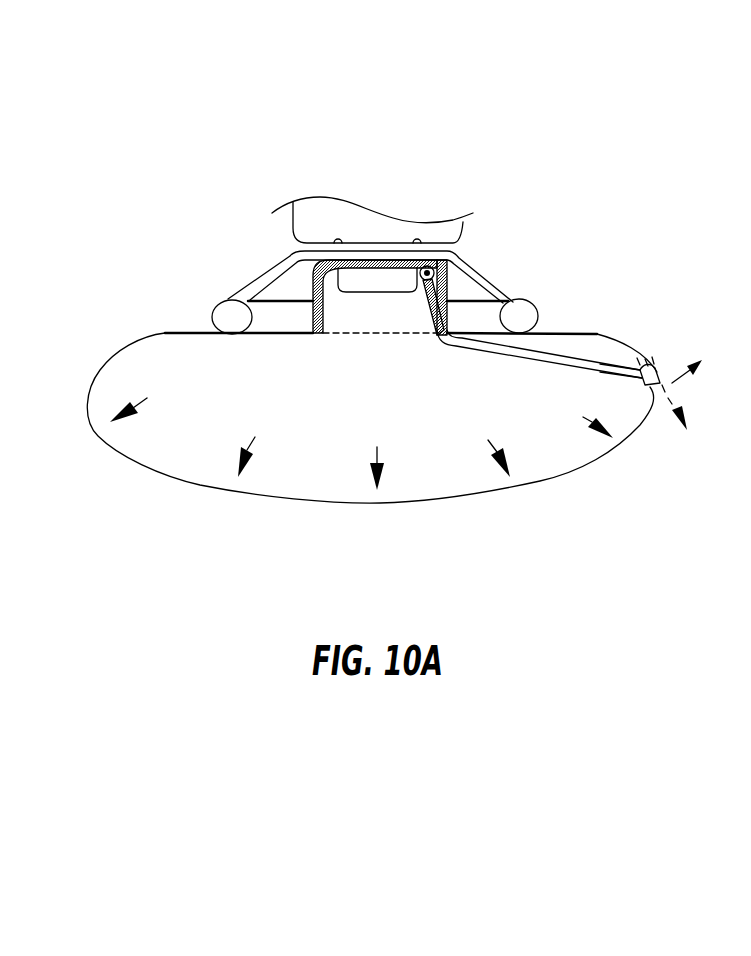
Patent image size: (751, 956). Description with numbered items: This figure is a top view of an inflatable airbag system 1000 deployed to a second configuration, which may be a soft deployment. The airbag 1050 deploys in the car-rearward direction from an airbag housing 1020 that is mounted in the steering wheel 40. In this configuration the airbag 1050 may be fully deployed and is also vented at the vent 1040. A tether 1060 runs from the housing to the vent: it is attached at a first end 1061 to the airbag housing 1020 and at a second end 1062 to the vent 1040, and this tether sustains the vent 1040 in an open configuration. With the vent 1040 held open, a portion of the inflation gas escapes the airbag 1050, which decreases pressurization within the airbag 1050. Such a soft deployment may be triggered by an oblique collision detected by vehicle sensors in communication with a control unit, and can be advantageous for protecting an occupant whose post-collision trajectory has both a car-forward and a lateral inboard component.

The inflatable airbag system 1000 is at (277, 128).
The airbag housing 1020 is at (290, 276).
The first end 1061 is at (453, 270).
The steering wheel 40 is at (523, 308).
The tether 1060 is at (580, 357).
The second end 1062 is at (640, 373).
The vent 1040 is at (648, 385).
The airbag 1050 is at (95, 421).